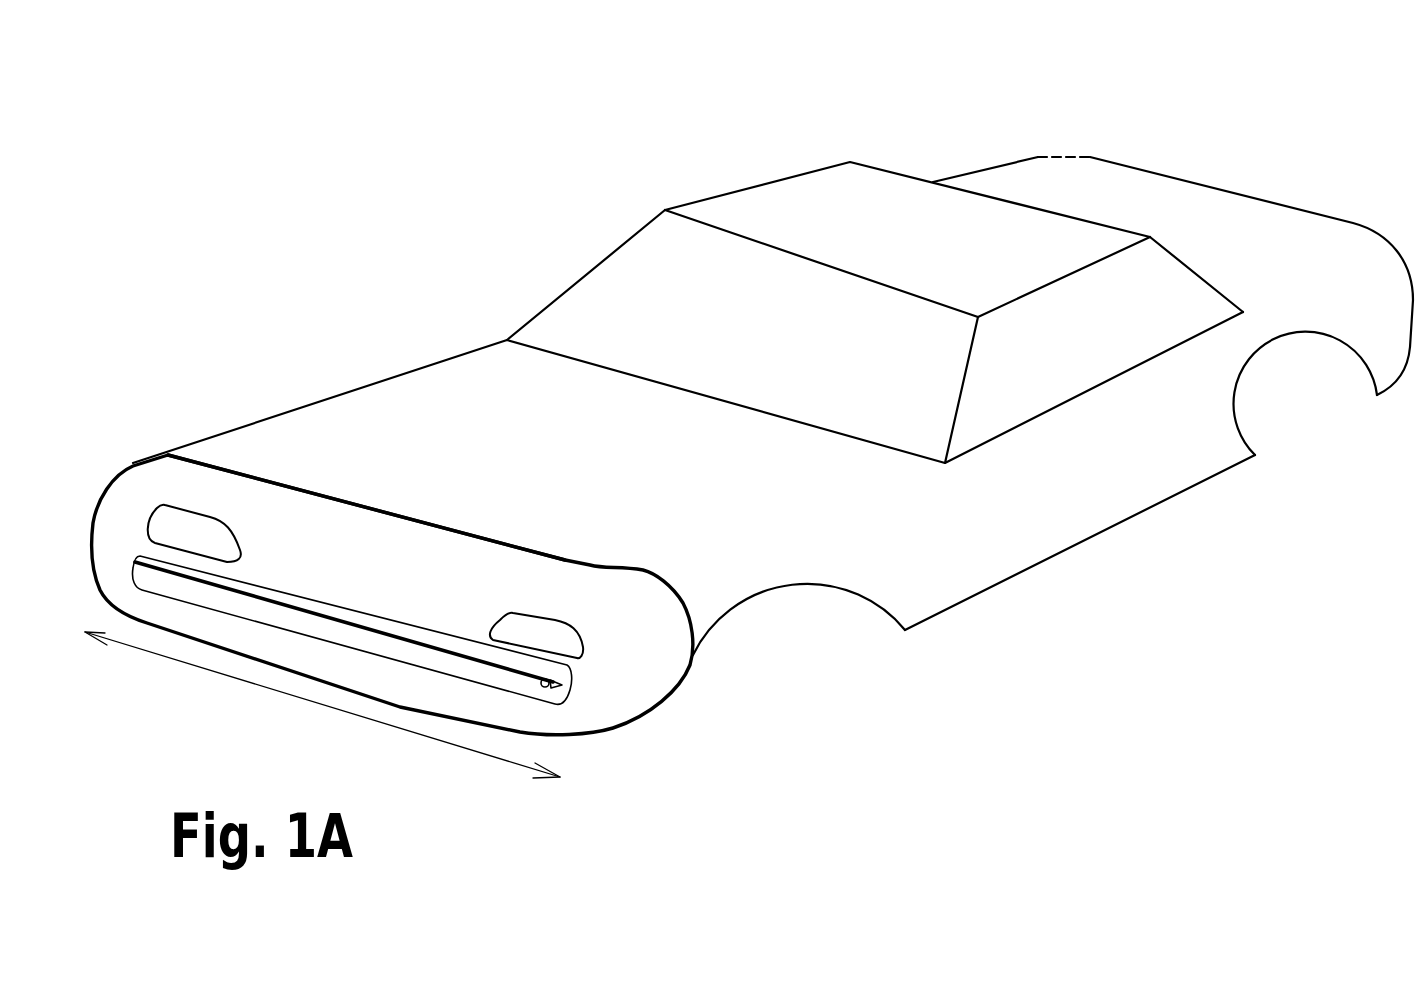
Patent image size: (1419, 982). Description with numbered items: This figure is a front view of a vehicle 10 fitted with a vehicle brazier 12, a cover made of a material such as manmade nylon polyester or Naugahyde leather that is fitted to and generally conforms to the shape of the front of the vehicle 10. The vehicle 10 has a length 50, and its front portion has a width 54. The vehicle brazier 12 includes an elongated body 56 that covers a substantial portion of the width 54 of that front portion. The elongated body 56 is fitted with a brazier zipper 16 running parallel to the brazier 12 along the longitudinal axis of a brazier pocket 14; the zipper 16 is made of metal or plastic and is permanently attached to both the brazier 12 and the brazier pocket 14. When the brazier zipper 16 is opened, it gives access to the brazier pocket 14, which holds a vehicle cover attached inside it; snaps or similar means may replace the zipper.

The vehicle 10 is at (797, 197).
The vehicle brazier 12 is at (232, 492).
The brazier pocket 14 is at (222, 602).
The brazier zipper 16 is at (560, 690).
The length 50 is at (715, 628).
The width 54 is at (293, 693).
The elongated body 56 is at (410, 513).